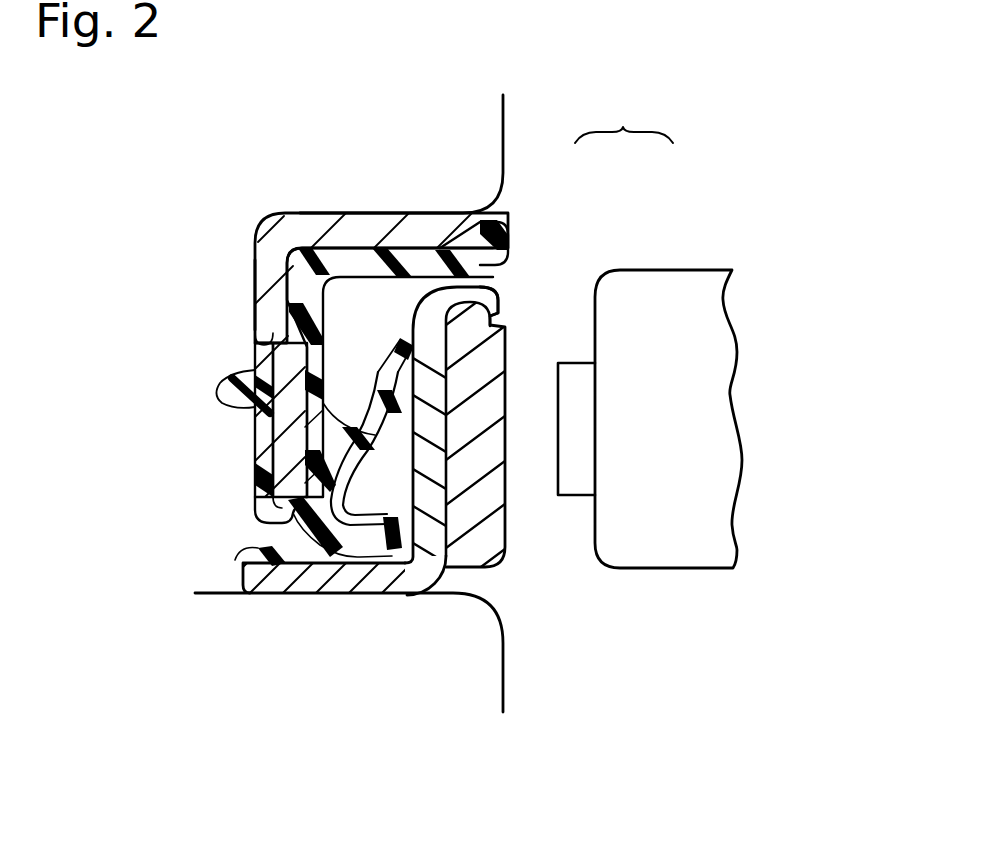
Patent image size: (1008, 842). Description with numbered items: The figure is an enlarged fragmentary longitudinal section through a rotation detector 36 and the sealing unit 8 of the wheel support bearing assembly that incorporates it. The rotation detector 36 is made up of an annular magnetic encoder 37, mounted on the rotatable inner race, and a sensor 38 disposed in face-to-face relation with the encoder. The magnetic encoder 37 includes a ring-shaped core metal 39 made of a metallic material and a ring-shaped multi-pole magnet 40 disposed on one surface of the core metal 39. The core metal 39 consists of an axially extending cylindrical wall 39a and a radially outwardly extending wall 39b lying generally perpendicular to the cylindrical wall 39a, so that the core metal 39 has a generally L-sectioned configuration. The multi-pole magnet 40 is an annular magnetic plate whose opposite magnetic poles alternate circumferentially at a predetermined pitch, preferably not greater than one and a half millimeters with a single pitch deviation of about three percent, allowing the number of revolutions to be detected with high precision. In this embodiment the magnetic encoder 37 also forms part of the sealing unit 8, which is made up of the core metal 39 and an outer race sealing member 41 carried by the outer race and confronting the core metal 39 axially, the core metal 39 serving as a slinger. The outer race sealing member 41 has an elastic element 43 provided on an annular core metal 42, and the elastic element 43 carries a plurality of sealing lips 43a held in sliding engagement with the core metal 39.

The sealing unit 8 is at (252, 222).
The rotation detector 36 is at (624, 113).
The magnetic encoder 37 is at (508, 296).
The sensor 38 is at (652, 282).
The core metal 39 is at (362, 601).
The cylindrical wall 39a is at (385, 583).
The radially outwardly extending wall 39b is at (440, 467).
The multi-pole magnet 40 is at (490, 360).
The outer race sealing member 41 is at (250, 315).
The annular core metal 42 is at (251, 282).
The elastic element 43 is at (320, 445).
The sealing lips 43a is at (397, 540).